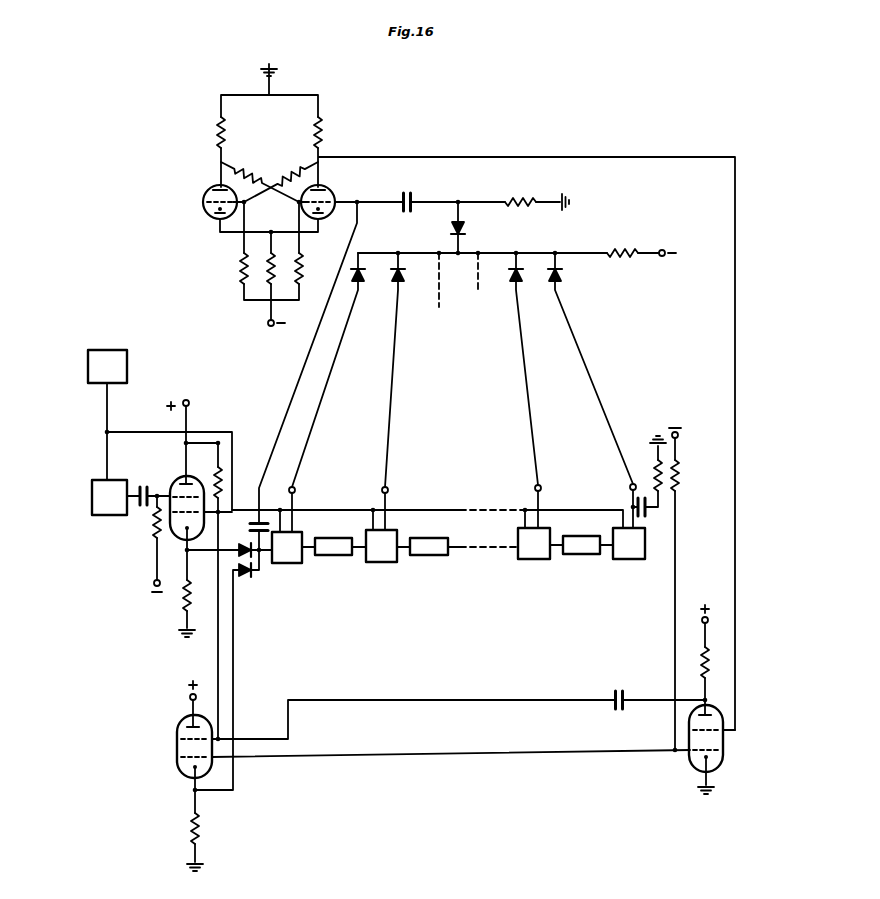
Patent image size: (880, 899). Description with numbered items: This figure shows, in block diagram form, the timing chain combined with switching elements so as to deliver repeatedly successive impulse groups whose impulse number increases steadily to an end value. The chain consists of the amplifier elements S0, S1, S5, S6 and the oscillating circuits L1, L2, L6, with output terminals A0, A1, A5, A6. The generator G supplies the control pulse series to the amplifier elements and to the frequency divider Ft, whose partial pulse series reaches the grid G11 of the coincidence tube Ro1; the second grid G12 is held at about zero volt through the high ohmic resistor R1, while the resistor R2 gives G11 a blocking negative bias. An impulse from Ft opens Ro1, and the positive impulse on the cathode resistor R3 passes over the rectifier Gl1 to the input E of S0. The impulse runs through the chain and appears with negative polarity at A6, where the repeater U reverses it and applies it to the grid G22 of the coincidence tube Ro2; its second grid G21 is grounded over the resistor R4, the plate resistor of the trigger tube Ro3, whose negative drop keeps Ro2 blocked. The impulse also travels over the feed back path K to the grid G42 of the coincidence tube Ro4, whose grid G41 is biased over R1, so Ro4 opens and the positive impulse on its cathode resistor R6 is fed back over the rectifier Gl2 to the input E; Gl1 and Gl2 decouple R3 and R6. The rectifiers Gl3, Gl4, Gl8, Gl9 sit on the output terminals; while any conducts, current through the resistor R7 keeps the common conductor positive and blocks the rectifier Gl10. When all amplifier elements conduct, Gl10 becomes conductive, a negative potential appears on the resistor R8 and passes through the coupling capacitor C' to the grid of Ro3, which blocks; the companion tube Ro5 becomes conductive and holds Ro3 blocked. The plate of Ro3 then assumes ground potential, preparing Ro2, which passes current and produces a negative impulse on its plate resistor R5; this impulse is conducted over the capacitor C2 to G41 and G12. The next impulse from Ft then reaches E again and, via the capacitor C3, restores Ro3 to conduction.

The generator G is at (143, 339).
The frequency divider Ft is at (110, 519).
The coincidence tube Ro1 is at (190, 502).
The grid of coincidence tube Ro1 G11 is at (175, 486).
The second grid of tube Ro1 G12 is at (187, 509).
The high ohmic resistor R1 is at (232, 591).
The resistor R2 is at (148, 544).
The cathode resistor R3 is at (196, 582).
The capacitor C3 is at (249, 532).
The rectifier Gl1 is at (252, 554).
The rectifier Gl2 is at (242, 583).
The input of the amplifier element S0 E is at (260, 553).
The output terminal A0 is at (283, 509).
The output terminal A1 is at (374, 508).
The output terminal A5 is at (525, 506).
The output terminal A6 is at (619, 506).
The amplifier element S0 is at (289, 574).
The amplifier element S1 is at (383, 574).
The amplifier element S5 is at (537, 570).
The amplifier element S6 is at (632, 570).
The oscillating circuit L1 is at (333, 557).
The oscillating circuit L2 is at (429, 557).
The oscillating circuit L6 is at (586, 580).
The repeater U is at (682, 589).
The coincidence tube Ro2 is at (714, 747).
The second grid of tube Ro2 G21 is at (722, 743).
The grid of tube Ro2 G22 is at (692, 763).
The plate resistor R5 is at (715, 660).
The capacitor C2 is at (659, 689).
The feed back path K is at (451, 747).
The coincidence tube Ro4 is at (180, 729).
The second grid of tube Ro4 G41 is at (382, 726).
The grid of tube Ro4 G42 is at (178, 766).
The cathode resistor R6 is at (204, 819).
The tube of the trigger circuit Ro3 is at (330, 199).
The tube of the trigger device Ro5 is at (207, 202).
The resistor R4 is at (328, 132).
The coupling capacitor C' is at (407, 192).
The resistor R8 is at (520, 193).
The rectifier Gl10 is at (473, 227).
The resistor R7 is at (622, 245).
The rectifier Gl3 is at (338, 370).
The rectifier Gl4 is at (405, 370).
The rectifier Gl8 is at (526, 369).
The rectifier Gl9 is at (590, 368).